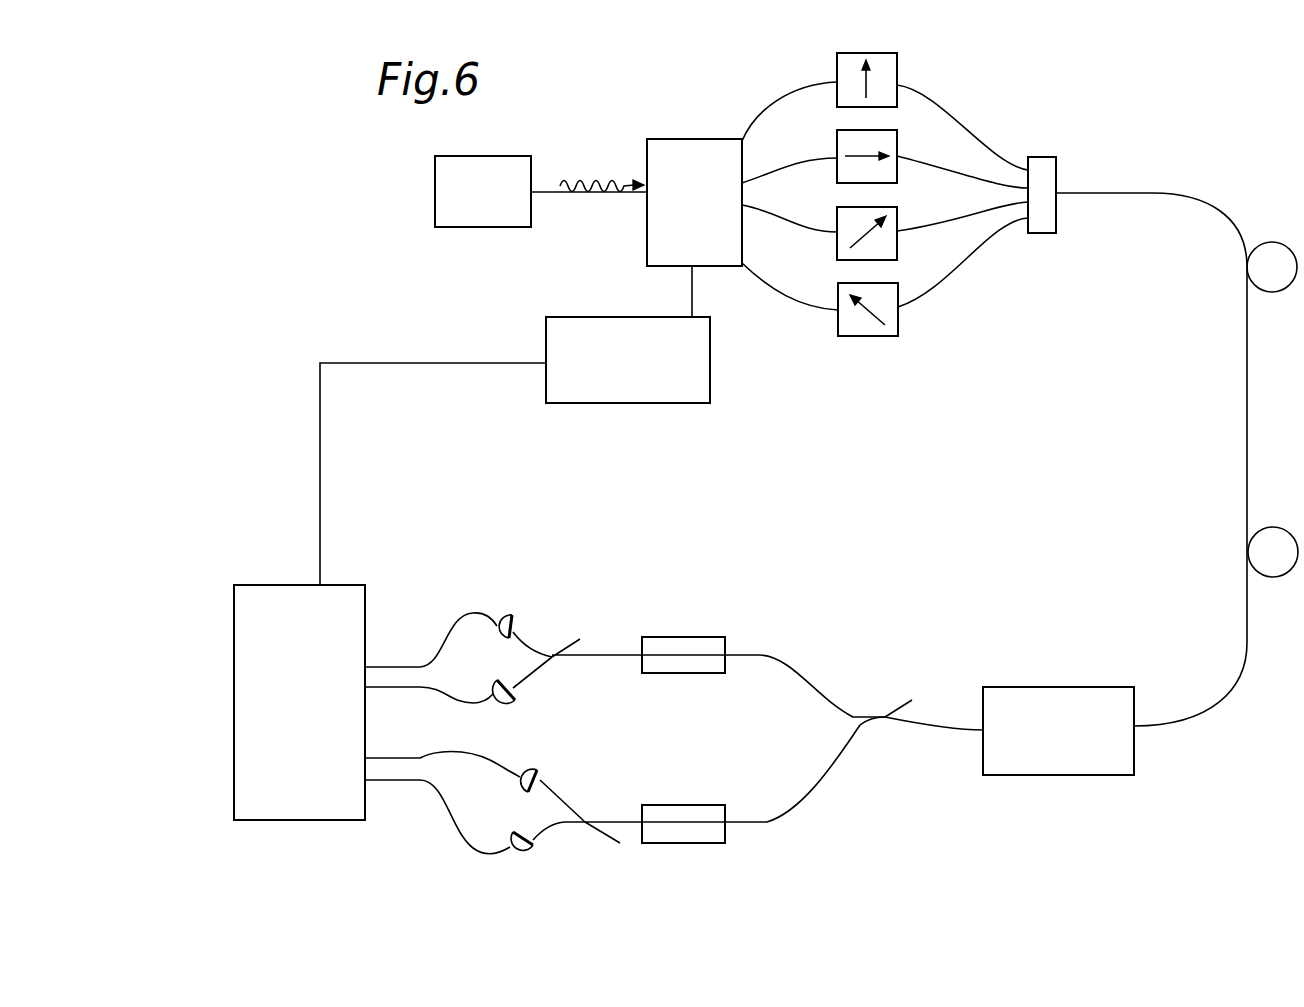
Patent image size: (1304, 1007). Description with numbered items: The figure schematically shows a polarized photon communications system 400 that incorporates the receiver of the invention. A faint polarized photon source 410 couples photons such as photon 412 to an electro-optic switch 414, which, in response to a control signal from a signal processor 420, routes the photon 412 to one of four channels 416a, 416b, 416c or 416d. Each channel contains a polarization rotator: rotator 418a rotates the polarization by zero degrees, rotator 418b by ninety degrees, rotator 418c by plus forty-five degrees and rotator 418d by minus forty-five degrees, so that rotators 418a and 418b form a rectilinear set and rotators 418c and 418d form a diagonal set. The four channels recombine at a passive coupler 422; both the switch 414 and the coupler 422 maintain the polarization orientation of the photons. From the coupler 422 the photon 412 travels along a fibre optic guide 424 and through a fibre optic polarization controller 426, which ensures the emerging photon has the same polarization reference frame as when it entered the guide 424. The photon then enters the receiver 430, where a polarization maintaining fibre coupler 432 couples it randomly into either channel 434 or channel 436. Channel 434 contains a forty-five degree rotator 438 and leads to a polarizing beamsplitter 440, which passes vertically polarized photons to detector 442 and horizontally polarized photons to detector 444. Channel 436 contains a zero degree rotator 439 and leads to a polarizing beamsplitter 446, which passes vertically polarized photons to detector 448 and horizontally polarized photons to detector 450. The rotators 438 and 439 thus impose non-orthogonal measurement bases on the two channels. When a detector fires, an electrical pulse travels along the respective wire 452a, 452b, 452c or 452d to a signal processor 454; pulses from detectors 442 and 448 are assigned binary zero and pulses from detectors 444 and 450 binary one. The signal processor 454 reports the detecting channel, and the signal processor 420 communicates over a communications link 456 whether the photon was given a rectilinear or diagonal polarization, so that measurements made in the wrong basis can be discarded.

The communications system 400 is at (1178, 183).
The faint polarized photon source 410 is at (481, 240).
The photon 412 is at (591, 178).
The electro-optic switch 414 is at (686, 139).
The channel 416a is at (775, 100).
The channel 416b is at (807, 158).
The channel 416c is at (807, 225).
The channel 416d is at (805, 287).
The polarization rotator 418a is at (897, 72).
The polarization rotator 418b is at (897, 145).
The polarization rotator 418c is at (887, 260).
The polarization rotator 418d is at (842, 337).
The signal processor 420 is at (712, 378).
The passive coupler 422 is at (1058, 233).
The fibre optic guide 424 is at (1281, 292).
The fibre optic polarization controller 426 is at (1137, 757).
The receiver 430 is at (854, 730).
The polarization maintaining fibre coupler 432 is at (888, 720).
The channel 434 is at (793, 810).
The channel 436 is at (818, 700).
The 45° rotator 438 is at (697, 843).
The 0° rotator 439 is at (705, 675).
The polarizing beamsplitter 440 is at (585, 820).
The detector 442 is at (535, 843).
The detector 444 is at (517, 783).
The polarizing beamsplitter 446 is at (557, 662).
The detector 448 is at (513, 707).
The detector 450 is at (503, 613).
The wire 452a is at (448, 820).
The wire 452b is at (420, 753).
The wire 452c is at (425, 692).
The wire 452d is at (427, 657).
The signal processor 454 is at (332, 823).
The communications link 456 is at (322, 512).